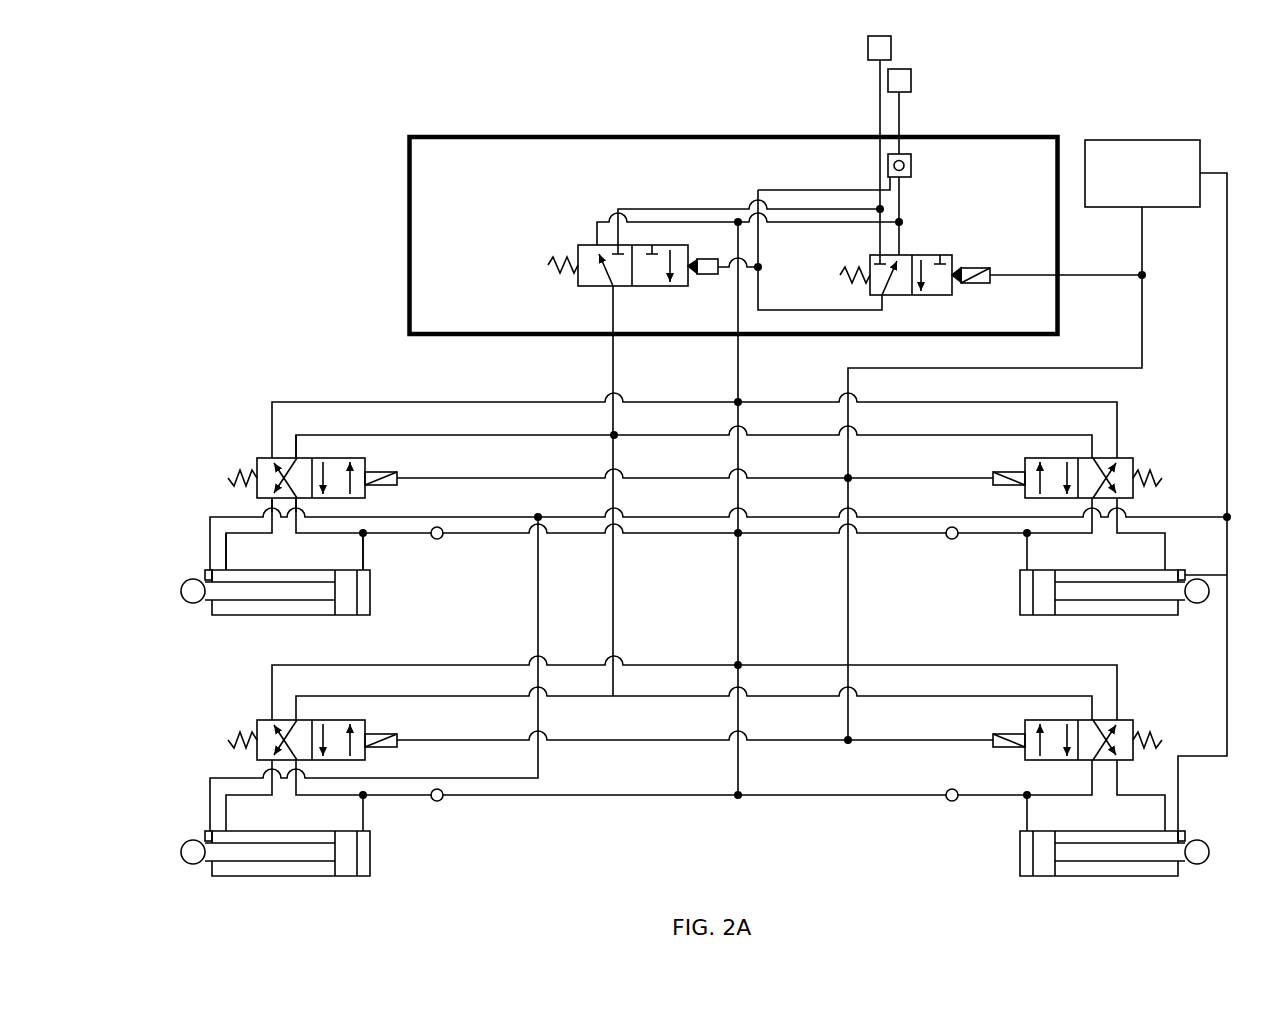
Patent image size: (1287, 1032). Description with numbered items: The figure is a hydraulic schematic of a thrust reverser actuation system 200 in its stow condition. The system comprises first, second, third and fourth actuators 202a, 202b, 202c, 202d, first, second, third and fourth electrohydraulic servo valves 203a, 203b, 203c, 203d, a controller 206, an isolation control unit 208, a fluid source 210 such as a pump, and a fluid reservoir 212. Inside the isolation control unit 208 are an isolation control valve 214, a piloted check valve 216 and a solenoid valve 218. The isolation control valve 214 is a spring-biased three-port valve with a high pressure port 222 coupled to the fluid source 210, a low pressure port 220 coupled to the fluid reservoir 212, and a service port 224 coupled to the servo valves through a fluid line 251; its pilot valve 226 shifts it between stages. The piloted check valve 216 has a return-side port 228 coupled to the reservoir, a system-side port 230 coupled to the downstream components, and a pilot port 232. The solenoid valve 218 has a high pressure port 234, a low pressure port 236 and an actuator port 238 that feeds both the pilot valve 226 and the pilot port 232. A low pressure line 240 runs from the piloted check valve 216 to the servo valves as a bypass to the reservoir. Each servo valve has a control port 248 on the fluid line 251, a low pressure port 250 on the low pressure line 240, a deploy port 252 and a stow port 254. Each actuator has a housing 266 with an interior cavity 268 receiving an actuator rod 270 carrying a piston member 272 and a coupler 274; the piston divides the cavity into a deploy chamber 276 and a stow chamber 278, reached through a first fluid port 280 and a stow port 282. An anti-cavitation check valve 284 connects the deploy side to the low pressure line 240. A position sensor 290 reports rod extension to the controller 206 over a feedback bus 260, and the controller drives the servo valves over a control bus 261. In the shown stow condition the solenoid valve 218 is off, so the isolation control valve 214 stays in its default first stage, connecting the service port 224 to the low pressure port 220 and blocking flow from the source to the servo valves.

The thrust reverser actuation system 200 is at (265, 124).
The first actuator 202a is at (294, 587).
The second actuator 202b is at (414, 855).
The third actuator 202c is at (994, 583).
The fourth actuator 202d is at (994, 852).
The first electrohydraulic servo valve 203a is at (299, 440).
The second electrohydraulic servo valve 203b is at (252, 712).
The third electrohydraulic servo valve 203c is at (1137, 440).
The fourth electrohydraulic servo valve 203d is at (1148, 702).
The controller 206 is at (1142, 173).
The isolation control unit 208 is at (407, 235).
The fluid source 210 is at (868, 37).
The fluid reservoir 212 is at (911, 73).
The isolation control valve 214 is at (712, 250).
The piloted check valve 216 is at (911, 165).
The solenoid valve 218 is at (923, 275).
The low pressure port 220 is at (597, 246).
The high pressure port 222 is at (618, 246).
The service port 224 is at (613, 290).
The pilot valve 226 is at (700, 276).
The return-side port 228 is at (899, 155).
The system-side port 230 is at (905, 178).
The pilot port 232 is at (890, 191).
The high pressure port 234 is at (880, 256).
The low pressure port 236 is at (899, 256).
The actuator port 238 is at (882, 295).
The low pressure line 240 is at (738, 379).
The control port 248 is at (298, 450).
The low pressure port 250 is at (272, 463).
The fluid line 251 is at (613, 379).
The deploy port 252 is at (298, 506).
The stow port 254 is at (270, 506).
The feedback bus 260 is at (1227, 330).
The control bus 261 is at (1142, 337).
The housing 266 is at (301, 615).
The interior cavity 268 is at (299, 580).
The actuator rod 270 is at (232, 600).
The piston member 272 is at (346, 611).
The coupler 274 is at (193, 603).
The deploy chamber 276 is at (366, 588).
The stow chamber 278 is at (248, 614).
The first fluid port 280 is at (365, 549).
The stow port 282 is at (236, 572).
The anti-cavitation check valve 284 is at (440, 540).
The position sensor 290 is at (205, 573).